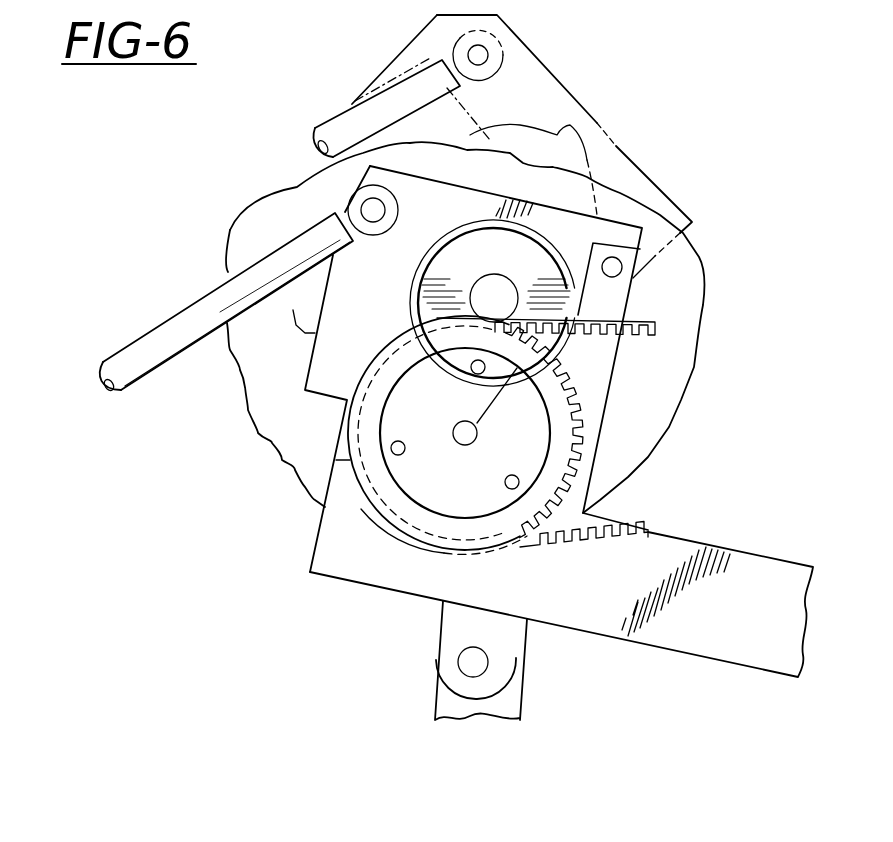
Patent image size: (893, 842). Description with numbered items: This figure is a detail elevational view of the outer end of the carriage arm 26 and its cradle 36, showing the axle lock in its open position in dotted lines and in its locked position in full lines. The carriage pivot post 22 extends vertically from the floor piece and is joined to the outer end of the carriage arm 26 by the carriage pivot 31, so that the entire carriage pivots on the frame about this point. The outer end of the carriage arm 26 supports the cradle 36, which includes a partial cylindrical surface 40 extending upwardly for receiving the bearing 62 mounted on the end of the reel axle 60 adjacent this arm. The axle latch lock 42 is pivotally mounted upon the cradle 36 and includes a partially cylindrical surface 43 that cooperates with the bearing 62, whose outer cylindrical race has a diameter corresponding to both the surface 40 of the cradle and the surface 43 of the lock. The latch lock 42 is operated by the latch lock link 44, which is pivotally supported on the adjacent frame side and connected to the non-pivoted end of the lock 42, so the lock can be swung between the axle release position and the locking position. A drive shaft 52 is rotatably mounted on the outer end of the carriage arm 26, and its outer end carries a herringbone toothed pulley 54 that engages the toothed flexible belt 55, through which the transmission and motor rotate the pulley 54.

The carriage pivot post 22 is at (437, 707).
The carriage arm 26 is at (713, 637).
The carriage pivot 31 is at (470, 661).
The cradle 36 is at (378, 326).
The partial cylindrical surface 40 is at (410, 288).
The axle latch lock 42 is at (577, 100).
The partially cylindrical surface 43 is at (613, 150).
The latch lock link 44 is at (340, 125).
The drive shaft 52 is at (457, 440).
The herringbone toothed pulley 54 is at (362, 481).
The toothed flexible belt 55 is at (638, 331).
The reel axle 60 is at (518, 302).
The bearing 62 is at (510, 262).